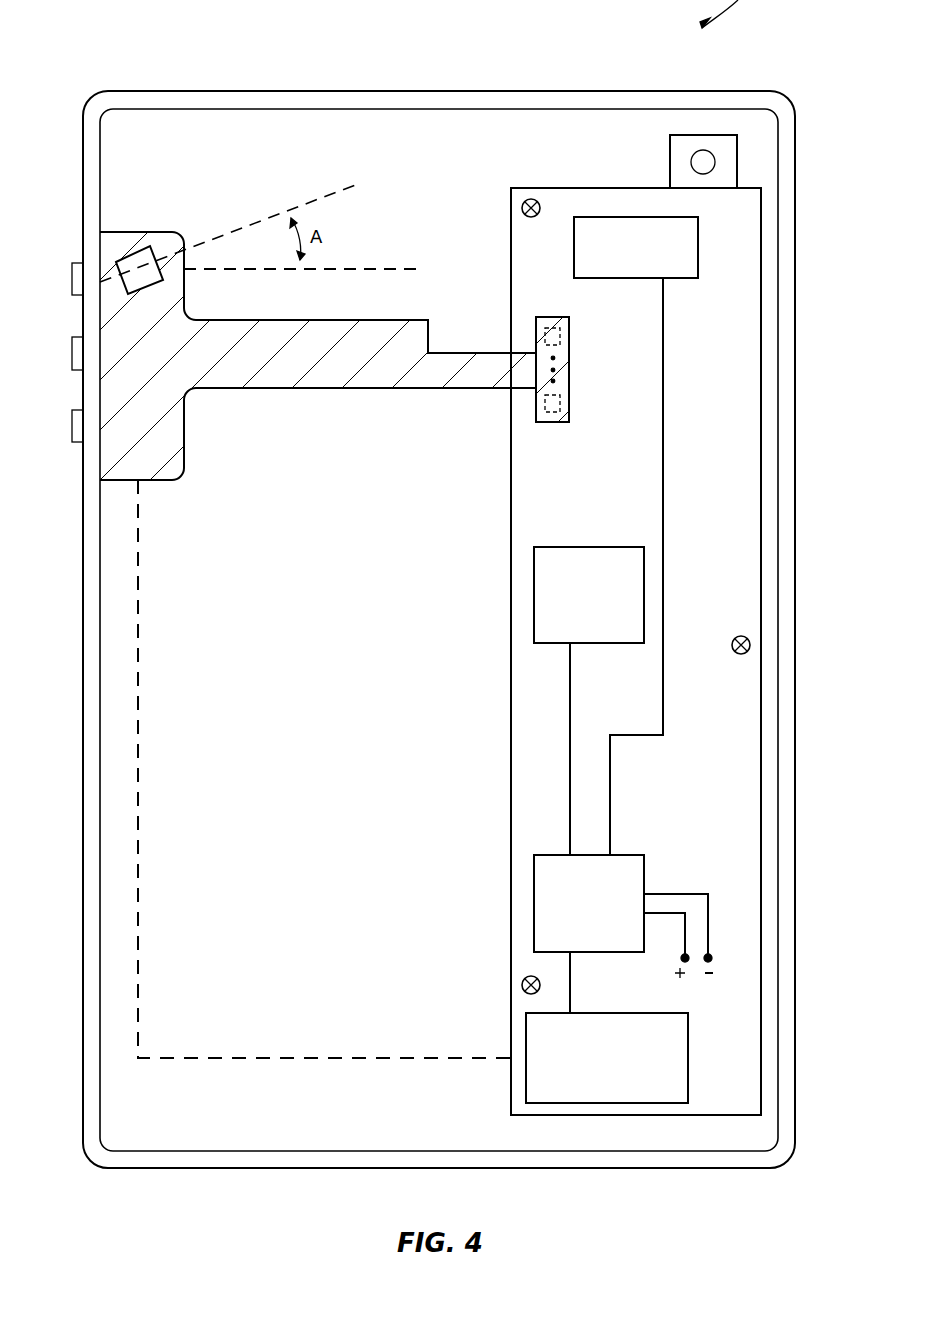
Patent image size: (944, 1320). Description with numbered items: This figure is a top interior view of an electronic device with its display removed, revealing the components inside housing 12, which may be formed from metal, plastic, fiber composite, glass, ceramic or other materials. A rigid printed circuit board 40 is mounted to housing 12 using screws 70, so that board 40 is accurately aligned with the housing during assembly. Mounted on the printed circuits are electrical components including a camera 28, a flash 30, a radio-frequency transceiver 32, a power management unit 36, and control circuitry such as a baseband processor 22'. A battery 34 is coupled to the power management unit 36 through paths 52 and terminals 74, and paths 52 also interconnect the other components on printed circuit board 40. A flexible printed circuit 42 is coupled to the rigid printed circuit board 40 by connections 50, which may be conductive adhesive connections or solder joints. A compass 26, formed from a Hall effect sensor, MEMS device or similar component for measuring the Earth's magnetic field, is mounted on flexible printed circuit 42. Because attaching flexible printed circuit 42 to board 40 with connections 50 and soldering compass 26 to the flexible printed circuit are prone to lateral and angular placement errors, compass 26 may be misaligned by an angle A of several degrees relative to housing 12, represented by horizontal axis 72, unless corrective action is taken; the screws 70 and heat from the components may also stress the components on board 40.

The housing 12 is at (788, 283).
The baseband processor 22' is at (639, 1058).
The compass 26 is at (132, 262).
The camera 28 is at (737, 155).
The flash 30 is at (618, 217).
The radio-frequency transceiver 32 is at (590, 547).
The battery 34 is at (138, 857).
The power management unit 36 is at (646, 870).
The printed circuit board 40 is at (511, 787).
The flexible printed circuit 42 is at (258, 390).
The connections 50 is at (569, 335).
The paths 52 is at (568, 688).
The screws 70 is at (531, 199).
The horizontal axis 72 is at (363, 272).
The terminals 74 is at (712, 978).